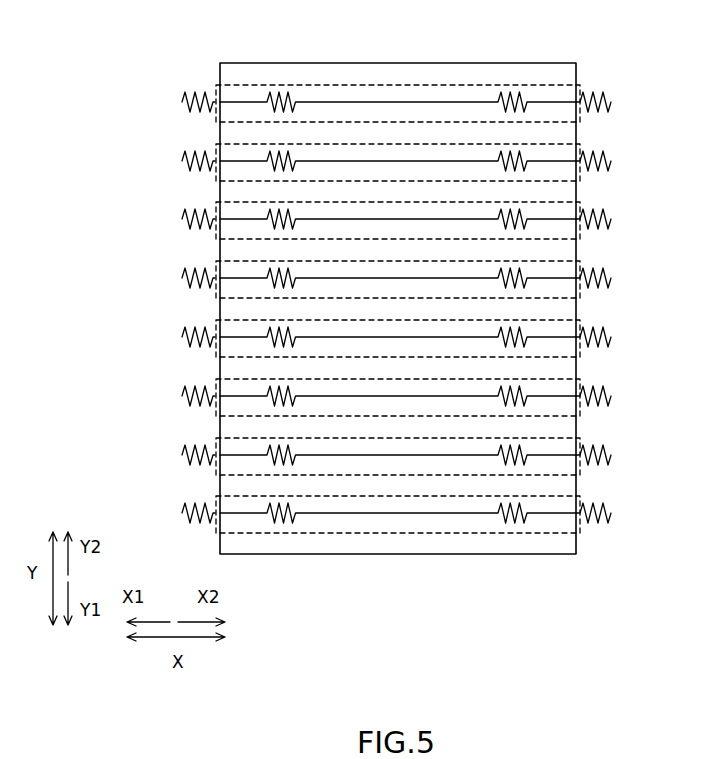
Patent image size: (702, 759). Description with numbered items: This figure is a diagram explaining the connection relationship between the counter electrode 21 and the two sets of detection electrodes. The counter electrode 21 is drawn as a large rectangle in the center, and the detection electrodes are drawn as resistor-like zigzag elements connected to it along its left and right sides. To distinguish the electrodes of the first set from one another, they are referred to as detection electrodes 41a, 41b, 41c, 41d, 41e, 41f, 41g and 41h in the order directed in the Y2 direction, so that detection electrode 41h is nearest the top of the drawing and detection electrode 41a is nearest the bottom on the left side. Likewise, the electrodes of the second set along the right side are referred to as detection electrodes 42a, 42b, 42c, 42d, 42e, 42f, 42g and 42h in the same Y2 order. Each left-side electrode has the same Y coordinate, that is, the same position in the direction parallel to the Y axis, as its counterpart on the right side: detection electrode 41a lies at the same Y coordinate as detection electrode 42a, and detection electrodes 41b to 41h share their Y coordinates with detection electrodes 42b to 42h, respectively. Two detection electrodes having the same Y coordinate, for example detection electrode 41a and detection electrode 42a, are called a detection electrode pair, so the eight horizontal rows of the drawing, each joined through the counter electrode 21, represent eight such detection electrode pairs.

The counter electrode 21 is at (497, 63).
The detection electrode 41a is at (161, 497).
The detection electrode 41b is at (161, 439).
The detection electrode 41c is at (161, 380).
The detection electrode 41d is at (161, 321).
The detection electrode 41e is at (161, 262).
The detection electrode 41f is at (161, 203).
The detection electrode 41g is at (161, 145).
The detection electrode 41h is at (161, 86).
The detection electrode 42a is at (634, 499).
The detection electrode 42b is at (634, 441).
The detection electrode 42c is at (634, 382).
The detection electrode 42d is at (634, 323).
The detection electrode 42e is at (634, 264).
The detection electrode 42f is at (634, 205).
The detection electrode 42g is at (634, 147).
The detection electrode 42h is at (634, 88).